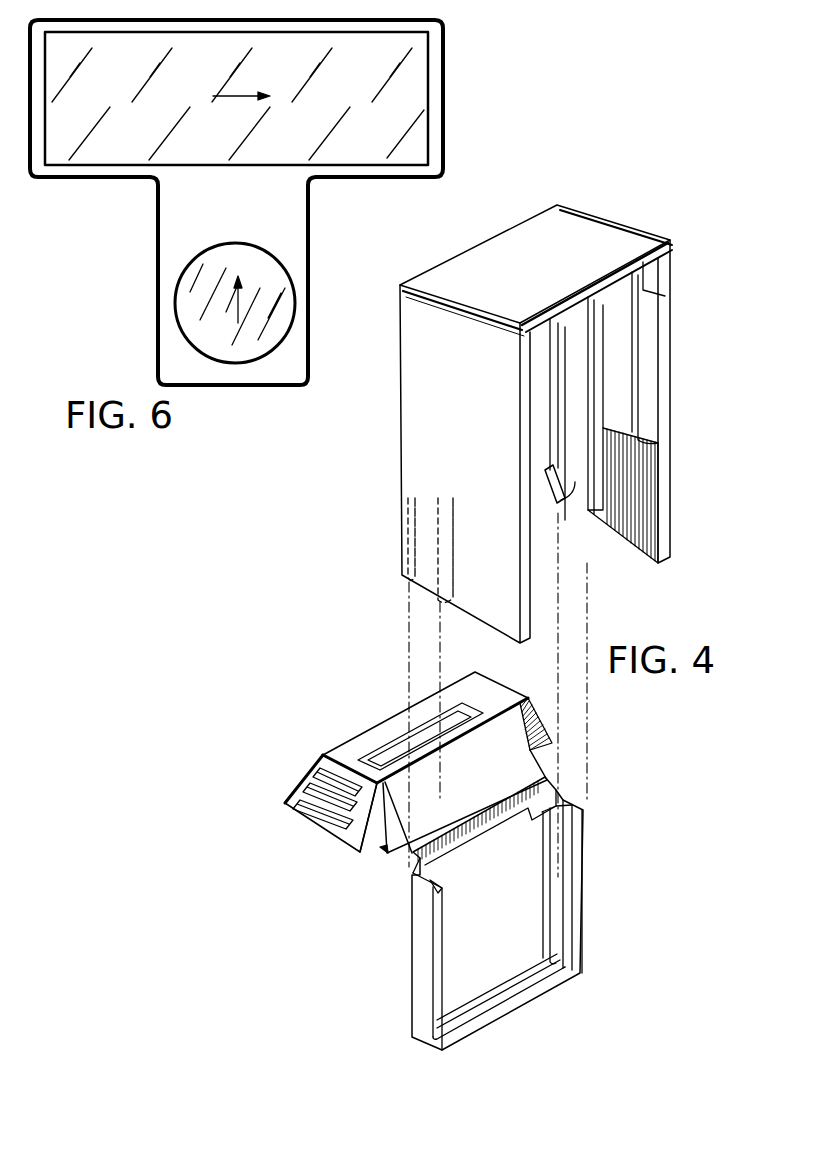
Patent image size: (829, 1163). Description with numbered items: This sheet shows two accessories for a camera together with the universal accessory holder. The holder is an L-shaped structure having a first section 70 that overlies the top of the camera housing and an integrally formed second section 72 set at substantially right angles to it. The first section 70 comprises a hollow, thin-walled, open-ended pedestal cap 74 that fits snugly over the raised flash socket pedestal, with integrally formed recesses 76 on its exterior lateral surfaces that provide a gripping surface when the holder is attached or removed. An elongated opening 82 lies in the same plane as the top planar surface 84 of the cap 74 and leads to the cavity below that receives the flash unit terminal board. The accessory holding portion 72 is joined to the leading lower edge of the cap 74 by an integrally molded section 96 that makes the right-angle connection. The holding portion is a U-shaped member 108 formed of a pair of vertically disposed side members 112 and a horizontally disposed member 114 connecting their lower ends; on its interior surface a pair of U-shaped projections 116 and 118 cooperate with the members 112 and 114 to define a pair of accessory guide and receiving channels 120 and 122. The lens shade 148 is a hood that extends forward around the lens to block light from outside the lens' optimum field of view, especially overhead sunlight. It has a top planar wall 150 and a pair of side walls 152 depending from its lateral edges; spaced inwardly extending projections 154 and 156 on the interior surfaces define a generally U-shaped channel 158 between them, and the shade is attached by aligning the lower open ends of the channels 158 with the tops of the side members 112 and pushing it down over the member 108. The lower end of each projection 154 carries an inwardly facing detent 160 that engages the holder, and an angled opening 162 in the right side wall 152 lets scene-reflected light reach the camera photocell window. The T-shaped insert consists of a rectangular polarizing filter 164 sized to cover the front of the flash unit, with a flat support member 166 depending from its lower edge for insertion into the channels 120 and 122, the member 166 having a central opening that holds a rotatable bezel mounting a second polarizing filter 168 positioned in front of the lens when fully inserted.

In FIG. 4, the first section 70 is at (416, 772).
In FIG. 4, the second section 72 is at (497, 925).
In FIG. 4, the pedestal cap 74 is at (328, 804).
In FIG. 4, the recesses 76 is at (332, 832).
In FIG. 4, the elongated opening 82 is at (402, 745).
In FIG. 4, the top planar surface 84 is at (508, 695).
In FIG. 4, the integrally molded section 96 is at (398, 857).
In FIG. 4, the U-shaped member 108 is at (510, 925).
In FIG. 4, the side members 112 is at (423, 1018).
In FIG. 4, the horizontally disposed member 114 is at (523, 1007).
In FIG. 4, the U-shaped projection 116 is at (550, 862).
In FIG. 4, the U-shaped projection 118 is at (438, 885).
In FIG. 4, the accessory guide and receiving channel 120 is at (423, 882).
In FIG. 4, the accessory guide and receiving channel 122 is at (573, 940).
In FIG. 4, the lens shade 148 is at (542, 424).
In FIG. 4, the top planar wall 150 is at (500, 257).
In FIG. 4, the side walls 152 is at (420, 410).
In FIG. 4, the projection 154 is at (553, 375).
In FIG. 4, the projection 156 is at (583, 307).
In FIG. 4, the U-shaped channel 158 is at (562, 498).
In FIG. 4, the detent 160 is at (547, 475).
In FIG. 4, the angled opening 162 is at (657, 345).
In FIG. 6, the polarizing filter 164 is at (418, 72).
In FIG. 6, the support member 166 is at (296, 206).
In FIG. 6, the second polarizing filter 168 is at (283, 302).